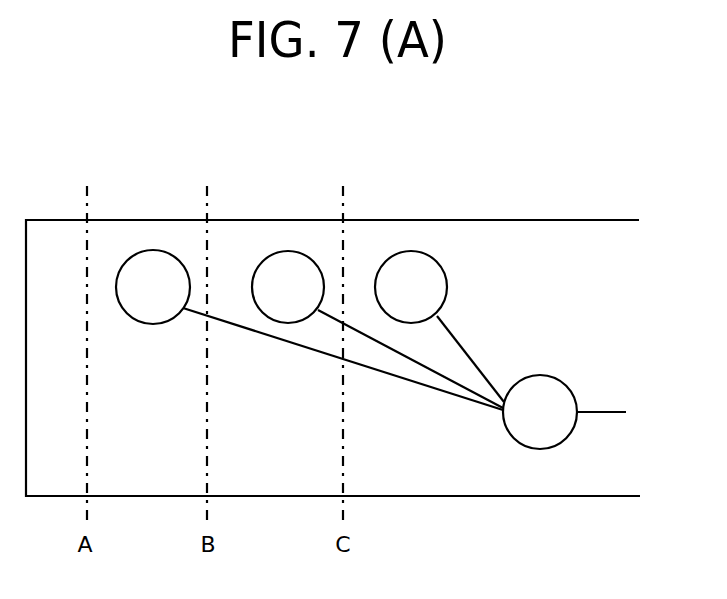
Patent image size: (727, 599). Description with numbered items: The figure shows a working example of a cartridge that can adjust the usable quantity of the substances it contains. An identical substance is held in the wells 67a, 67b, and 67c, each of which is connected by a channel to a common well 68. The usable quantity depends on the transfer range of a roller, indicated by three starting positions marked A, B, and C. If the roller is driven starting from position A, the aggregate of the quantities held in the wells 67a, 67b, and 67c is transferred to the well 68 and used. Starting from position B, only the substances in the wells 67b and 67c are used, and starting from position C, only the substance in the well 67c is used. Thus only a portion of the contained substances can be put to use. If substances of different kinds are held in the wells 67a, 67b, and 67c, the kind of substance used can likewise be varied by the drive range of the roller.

The well 67a is at (153, 250).
The well 67b is at (288, 251).
The well 67c is at (411, 251).
The well 68 is at (538, 449).